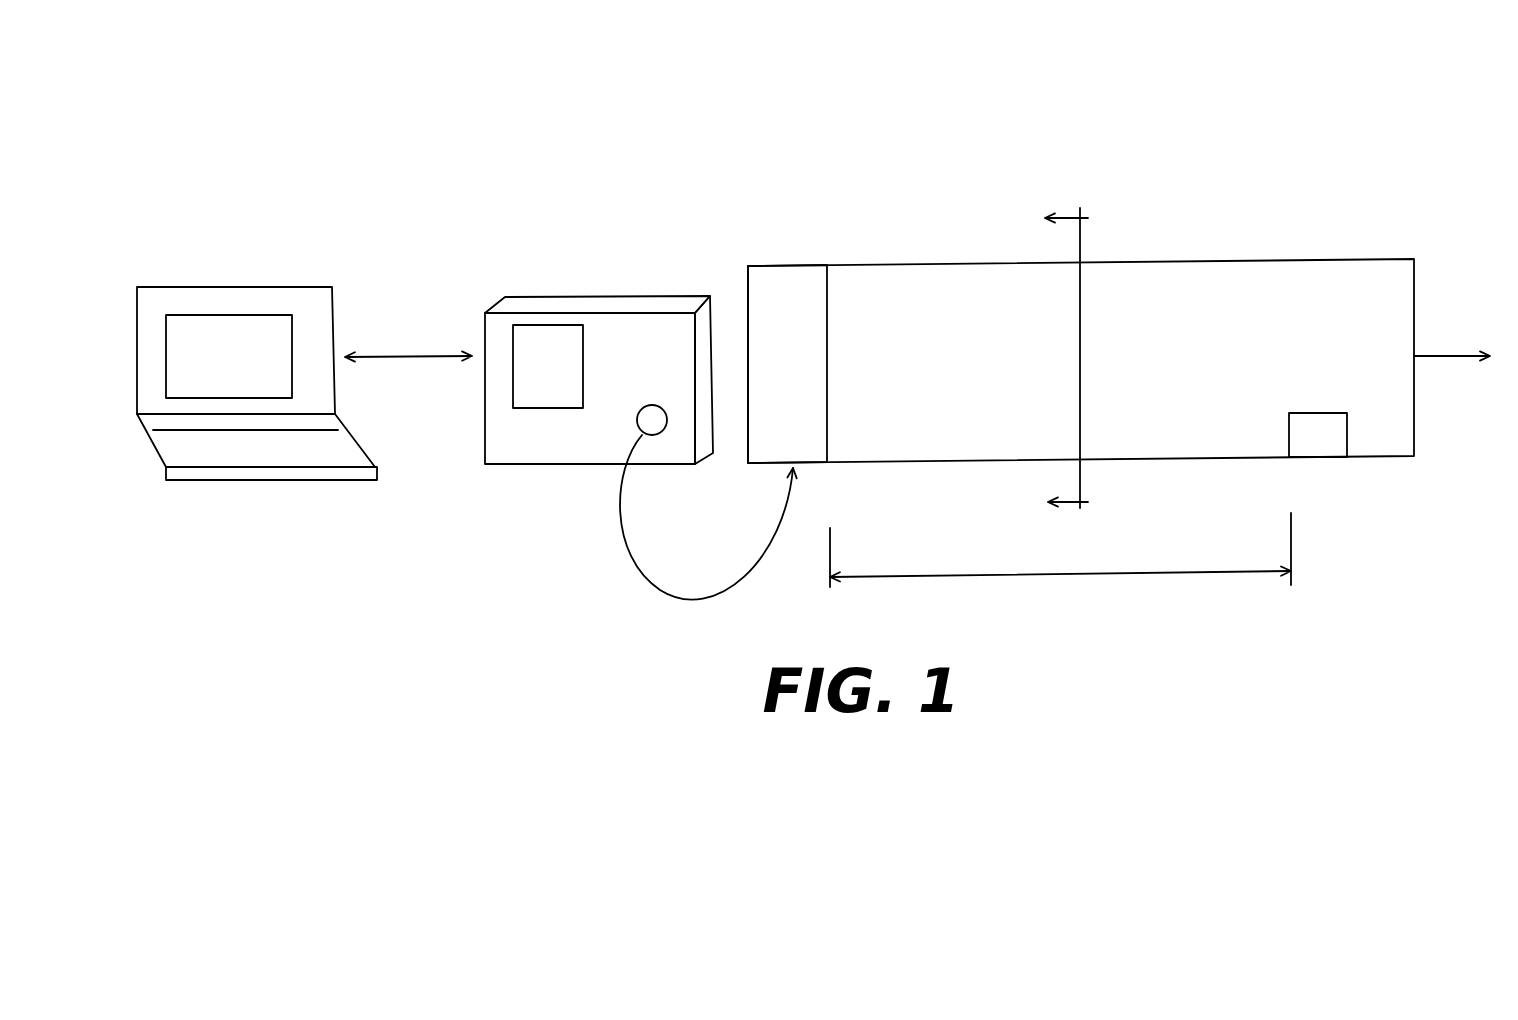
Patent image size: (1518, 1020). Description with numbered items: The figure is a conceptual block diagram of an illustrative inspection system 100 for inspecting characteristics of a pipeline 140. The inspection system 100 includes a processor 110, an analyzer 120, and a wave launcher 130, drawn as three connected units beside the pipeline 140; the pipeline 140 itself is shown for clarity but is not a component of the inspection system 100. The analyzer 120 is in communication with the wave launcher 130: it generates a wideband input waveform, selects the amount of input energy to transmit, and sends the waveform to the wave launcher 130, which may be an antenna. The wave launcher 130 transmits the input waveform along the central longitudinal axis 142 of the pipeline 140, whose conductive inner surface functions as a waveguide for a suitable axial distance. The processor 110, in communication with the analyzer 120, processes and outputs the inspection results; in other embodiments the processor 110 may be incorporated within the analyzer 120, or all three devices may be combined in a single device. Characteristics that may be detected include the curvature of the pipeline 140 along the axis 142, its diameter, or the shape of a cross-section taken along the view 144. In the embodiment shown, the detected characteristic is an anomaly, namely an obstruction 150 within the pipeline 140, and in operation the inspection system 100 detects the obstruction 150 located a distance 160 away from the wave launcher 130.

The inspection system 100 is at (968, 105).
The processor 110 is at (335, 472).
The analyzer 120 is at (588, 466).
The wave launcher 130 is at (806, 254).
The pipeline 140 is at (1256, 242).
The central longitudinal axis 142 is at (1433, 356).
The view 144 is at (1081, 487).
The obstruction 150 is at (1327, 478).
The distance 160 is at (1222, 567).